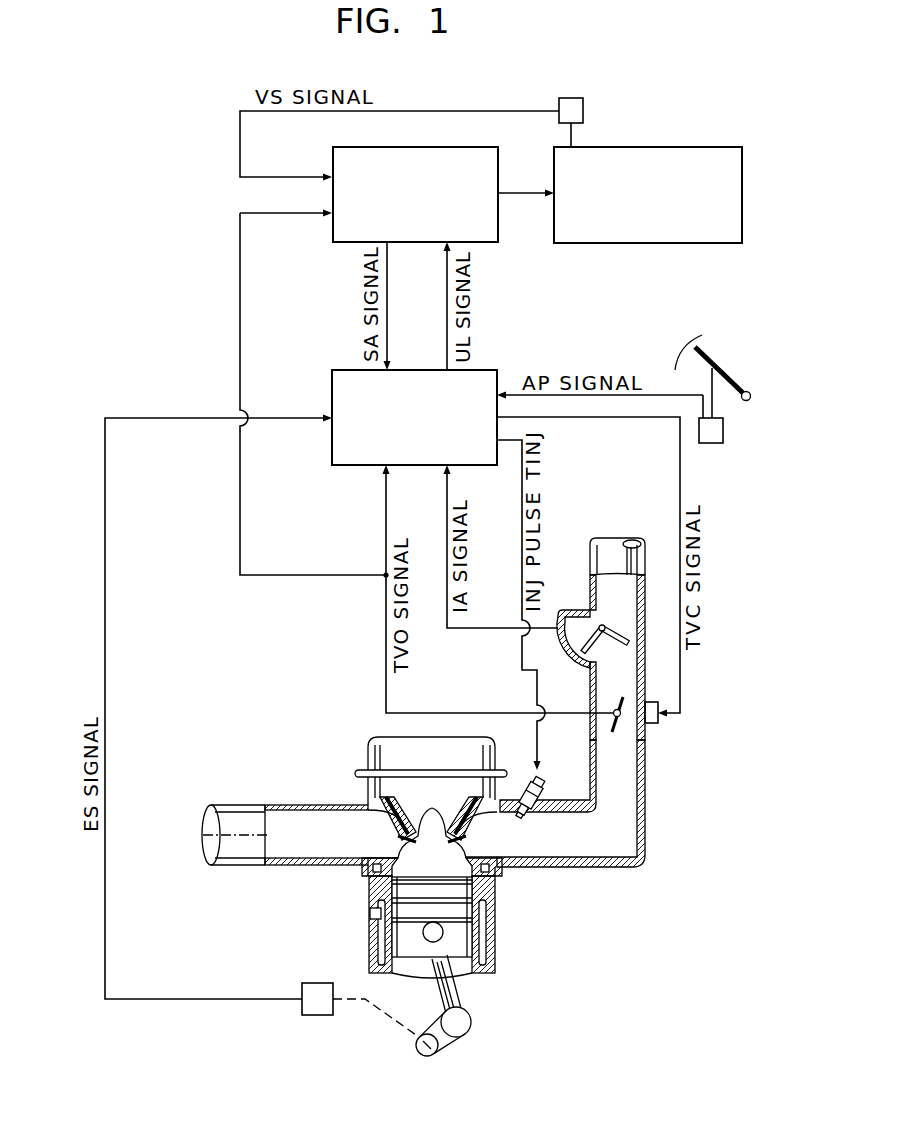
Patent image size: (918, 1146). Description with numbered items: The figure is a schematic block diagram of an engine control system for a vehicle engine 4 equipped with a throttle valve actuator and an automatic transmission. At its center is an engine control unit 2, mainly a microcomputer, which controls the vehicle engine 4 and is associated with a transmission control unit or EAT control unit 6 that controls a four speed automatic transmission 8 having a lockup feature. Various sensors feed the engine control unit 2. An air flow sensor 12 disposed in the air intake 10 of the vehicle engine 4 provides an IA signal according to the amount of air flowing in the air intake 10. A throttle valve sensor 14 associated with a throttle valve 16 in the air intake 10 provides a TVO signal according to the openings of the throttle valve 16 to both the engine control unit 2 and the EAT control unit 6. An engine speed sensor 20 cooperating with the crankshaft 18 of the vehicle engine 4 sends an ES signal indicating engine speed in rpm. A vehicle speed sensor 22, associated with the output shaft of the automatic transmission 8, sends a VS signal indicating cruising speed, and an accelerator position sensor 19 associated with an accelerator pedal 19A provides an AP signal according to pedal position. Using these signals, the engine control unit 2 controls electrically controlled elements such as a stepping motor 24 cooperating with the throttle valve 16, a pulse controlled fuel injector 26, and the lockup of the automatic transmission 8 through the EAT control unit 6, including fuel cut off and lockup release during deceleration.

The engine control unit 2 is at (497, 370).
The vehicle engine 4 is at (497, 910).
The EAT control unit 6 is at (498, 156).
The automatic transmission 8 is at (653, 147).
The air intake 10 is at (615, 852).
The air flow sensor 12 is at (590, 606).
The throttle valve sensor 14 is at (612, 710).
The throttle valve 16 is at (610, 728).
The crankshaft 18 is at (433, 1055).
The accelerator position sensor 19 is at (713, 443).
The accelerator pedal 19A is at (727, 368).
The engine speed sensor 20 is at (318, 983).
The vehicle speed sensor 22 is at (575, 98).
The stepping motor 24 is at (660, 724).
The fuel injector 26 is at (527, 784).